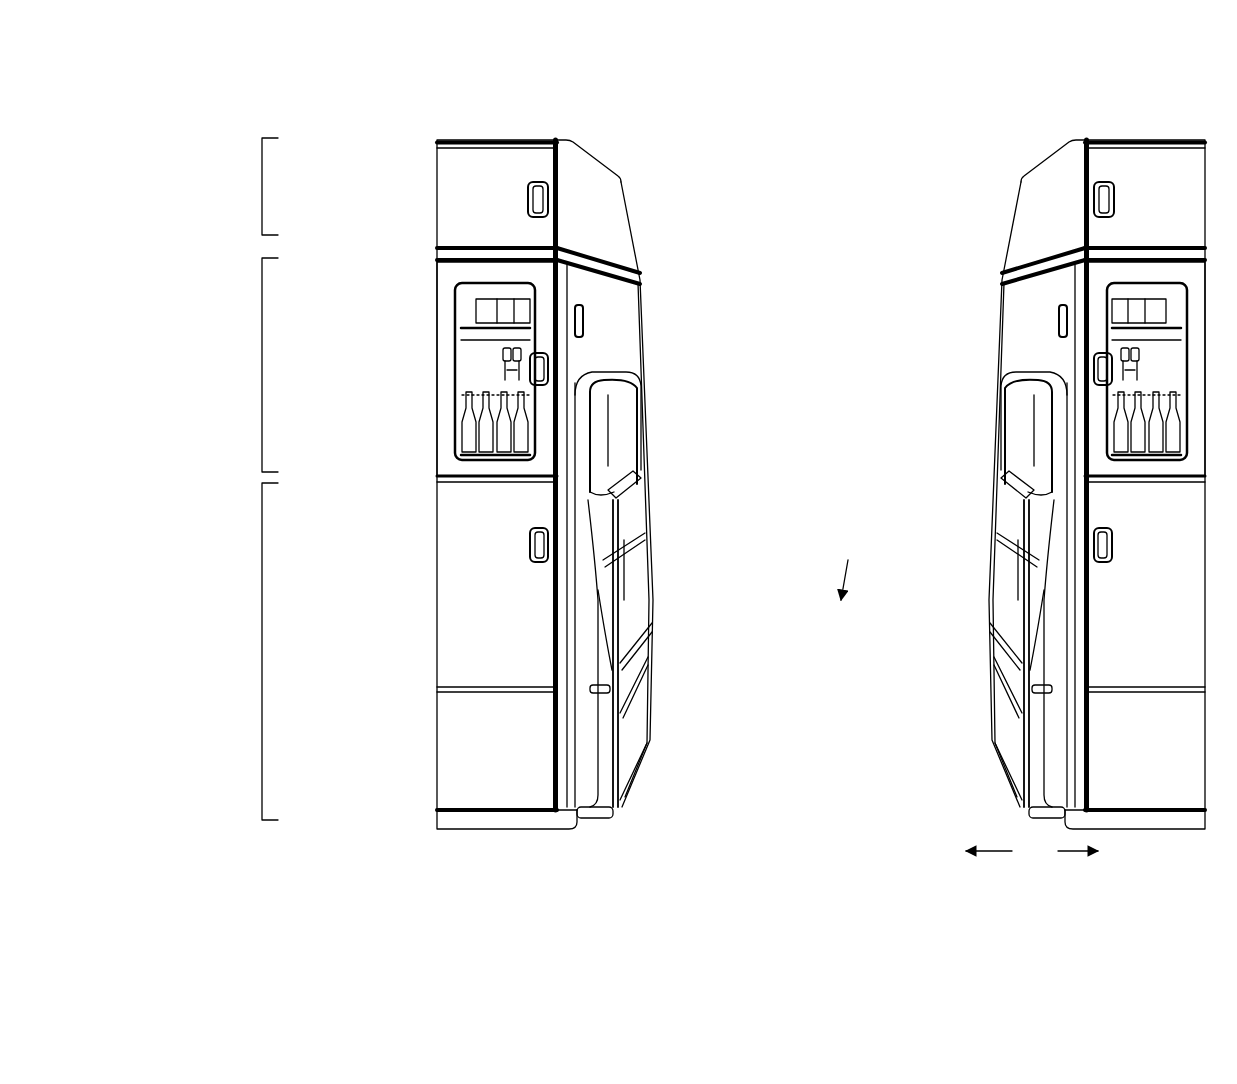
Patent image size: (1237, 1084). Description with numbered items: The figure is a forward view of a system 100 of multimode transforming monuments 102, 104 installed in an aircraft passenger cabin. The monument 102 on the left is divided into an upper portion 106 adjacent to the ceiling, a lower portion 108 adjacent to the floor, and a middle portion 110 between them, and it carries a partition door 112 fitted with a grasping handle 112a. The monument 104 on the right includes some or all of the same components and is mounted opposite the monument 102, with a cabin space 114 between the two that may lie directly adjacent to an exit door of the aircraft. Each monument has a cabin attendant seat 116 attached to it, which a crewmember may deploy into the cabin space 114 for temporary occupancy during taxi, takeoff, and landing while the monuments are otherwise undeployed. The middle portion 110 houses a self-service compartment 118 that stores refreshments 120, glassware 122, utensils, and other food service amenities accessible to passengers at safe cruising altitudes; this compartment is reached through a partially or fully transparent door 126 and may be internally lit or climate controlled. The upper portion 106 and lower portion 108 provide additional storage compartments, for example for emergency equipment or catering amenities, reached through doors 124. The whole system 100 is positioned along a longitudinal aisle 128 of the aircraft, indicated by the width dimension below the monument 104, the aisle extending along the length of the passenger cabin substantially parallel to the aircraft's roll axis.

The system of multimode transforming monuments 100 is at (343, 148).
The monument 102 is at (602, 190).
The monument 104 is at (1043, 203).
The upper portion 106 is at (262, 200).
The lower portion 108 is at (262, 603).
The middle portion 110 is at (262, 378).
The partition door 112 is at (602, 343).
The grasping handle 112a is at (585, 318).
The cabin space 114 is at (846, 566).
The cabin attendant seat 116 is at (620, 457).
The self-service compartment 118 is at (425, 346).
The refreshments 120 is at (637, 350).
The glassware 122 is at (463, 313).
The doors 124 is at (483, 183).
The transparent door 126 is at (637, 350).
The longitudinal aisle 128 is at (1032, 852).